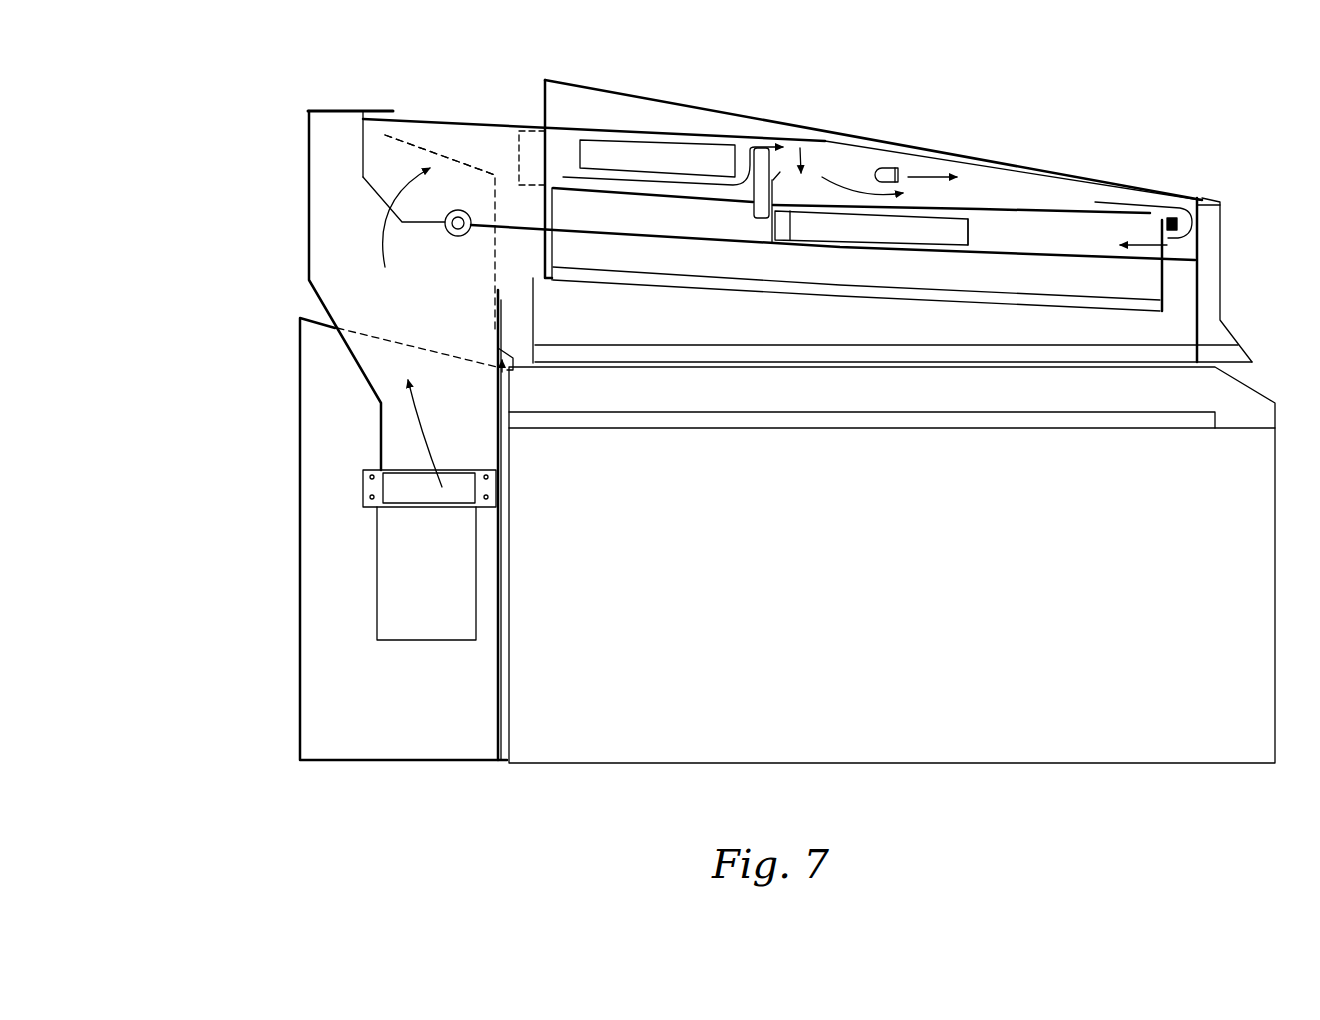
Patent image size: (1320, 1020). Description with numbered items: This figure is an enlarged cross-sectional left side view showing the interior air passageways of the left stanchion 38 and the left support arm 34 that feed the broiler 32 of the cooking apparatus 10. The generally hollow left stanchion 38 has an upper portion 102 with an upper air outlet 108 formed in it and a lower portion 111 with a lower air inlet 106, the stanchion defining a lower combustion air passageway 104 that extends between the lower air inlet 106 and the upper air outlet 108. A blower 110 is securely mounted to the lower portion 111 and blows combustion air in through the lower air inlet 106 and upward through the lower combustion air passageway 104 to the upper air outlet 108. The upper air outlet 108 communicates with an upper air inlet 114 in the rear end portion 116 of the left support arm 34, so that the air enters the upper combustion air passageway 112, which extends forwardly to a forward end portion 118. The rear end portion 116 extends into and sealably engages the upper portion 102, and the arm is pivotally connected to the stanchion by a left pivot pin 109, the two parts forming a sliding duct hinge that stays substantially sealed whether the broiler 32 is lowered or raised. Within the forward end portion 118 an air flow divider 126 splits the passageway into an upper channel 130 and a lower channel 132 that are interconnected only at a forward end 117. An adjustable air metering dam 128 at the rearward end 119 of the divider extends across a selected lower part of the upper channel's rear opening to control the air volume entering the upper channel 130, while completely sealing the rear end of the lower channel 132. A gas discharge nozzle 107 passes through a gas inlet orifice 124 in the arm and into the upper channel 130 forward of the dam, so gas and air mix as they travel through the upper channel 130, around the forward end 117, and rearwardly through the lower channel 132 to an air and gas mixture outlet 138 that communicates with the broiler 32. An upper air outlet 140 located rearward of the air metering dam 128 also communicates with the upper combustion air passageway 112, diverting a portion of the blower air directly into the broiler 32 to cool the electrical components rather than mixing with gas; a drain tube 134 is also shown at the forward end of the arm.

The dry cleaning apparatus 10 is at (262, 90).
The broiler 32 is at (1065, 168).
The left support arm 34 is at (480, 143).
The left stanchion 38 is at (387, 373).
The upper portion 102 is at (340, 137).
The lower combustion air passageway 104 is at (445, 330).
The lower air inlet 106 is at (423, 503).
The gas discharge nozzle 107 is at (880, 168).
The upper air outlet 108 is at (440, 155).
The left pivot pin 109 is at (458, 236).
The blower 110 is at (420, 565).
The lower portion 111 is at (480, 450).
The upper combustion air passageway 112 is at (800, 148).
The upper air inlet 114 is at (372, 188).
The rear end portion 116 is at (378, 160).
The forward end 117 is at (1210, 213).
The forward end portion 118 is at (982, 205).
The rearward end 119 is at (787, 213).
The gas inlet orifice 124 is at (897, 166).
The air flow divider 126 is at (817, 187).
The adjustable air metering dam 128 is at (790, 173).
The upper channel 130 is at (957, 167).
The lower channel 132 is at (1022, 240).
The drain tube 134 is at (1153, 220).
The air and gas mixture outlet 138 is at (797, 227).
The upper air outlet 140 is at (682, 140).